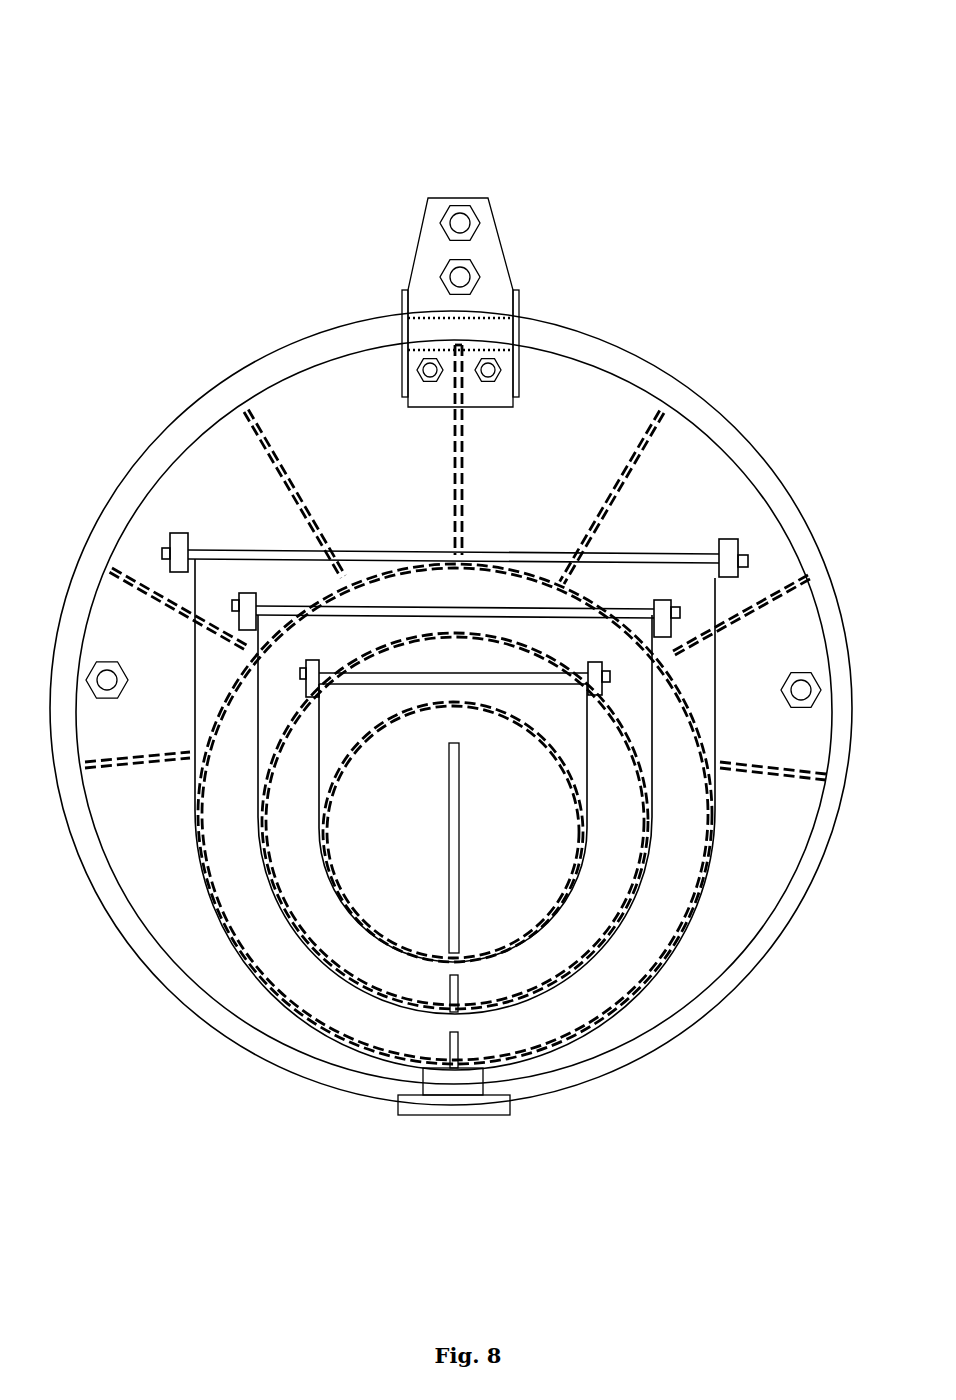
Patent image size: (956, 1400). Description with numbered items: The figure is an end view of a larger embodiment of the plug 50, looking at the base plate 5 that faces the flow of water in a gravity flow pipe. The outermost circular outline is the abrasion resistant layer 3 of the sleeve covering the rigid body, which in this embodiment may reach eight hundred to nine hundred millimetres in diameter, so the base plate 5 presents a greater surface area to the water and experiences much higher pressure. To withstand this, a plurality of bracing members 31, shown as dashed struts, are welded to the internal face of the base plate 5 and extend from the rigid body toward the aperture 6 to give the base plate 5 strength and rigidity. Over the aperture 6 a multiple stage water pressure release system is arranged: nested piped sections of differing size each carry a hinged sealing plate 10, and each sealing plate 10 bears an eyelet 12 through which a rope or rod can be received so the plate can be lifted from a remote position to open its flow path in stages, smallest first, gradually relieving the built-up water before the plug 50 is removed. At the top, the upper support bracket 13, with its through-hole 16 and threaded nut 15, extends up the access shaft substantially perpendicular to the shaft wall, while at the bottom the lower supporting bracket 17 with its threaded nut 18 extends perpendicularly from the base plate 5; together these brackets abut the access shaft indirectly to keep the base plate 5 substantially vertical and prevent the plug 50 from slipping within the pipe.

The plug 50 is at (830, 124).
The abrasion resistant layer 3 is at (300, 334).
The base plate 5 is at (690, 478).
The upper support bracket 13 is at (488, 298).
The threaded nut 15 is at (470, 216).
The through-hole 16 is at (450, 223).
The bracing members 31 is at (277, 467).
The sealing plate 10 is at (675, 588).
The aperture 6 is at (207, 905).
The eyelet 12 is at (450, 998).
The threaded nut 18 is at (447, 1080).
The lower supporting bracket 17 is at (493, 1109).